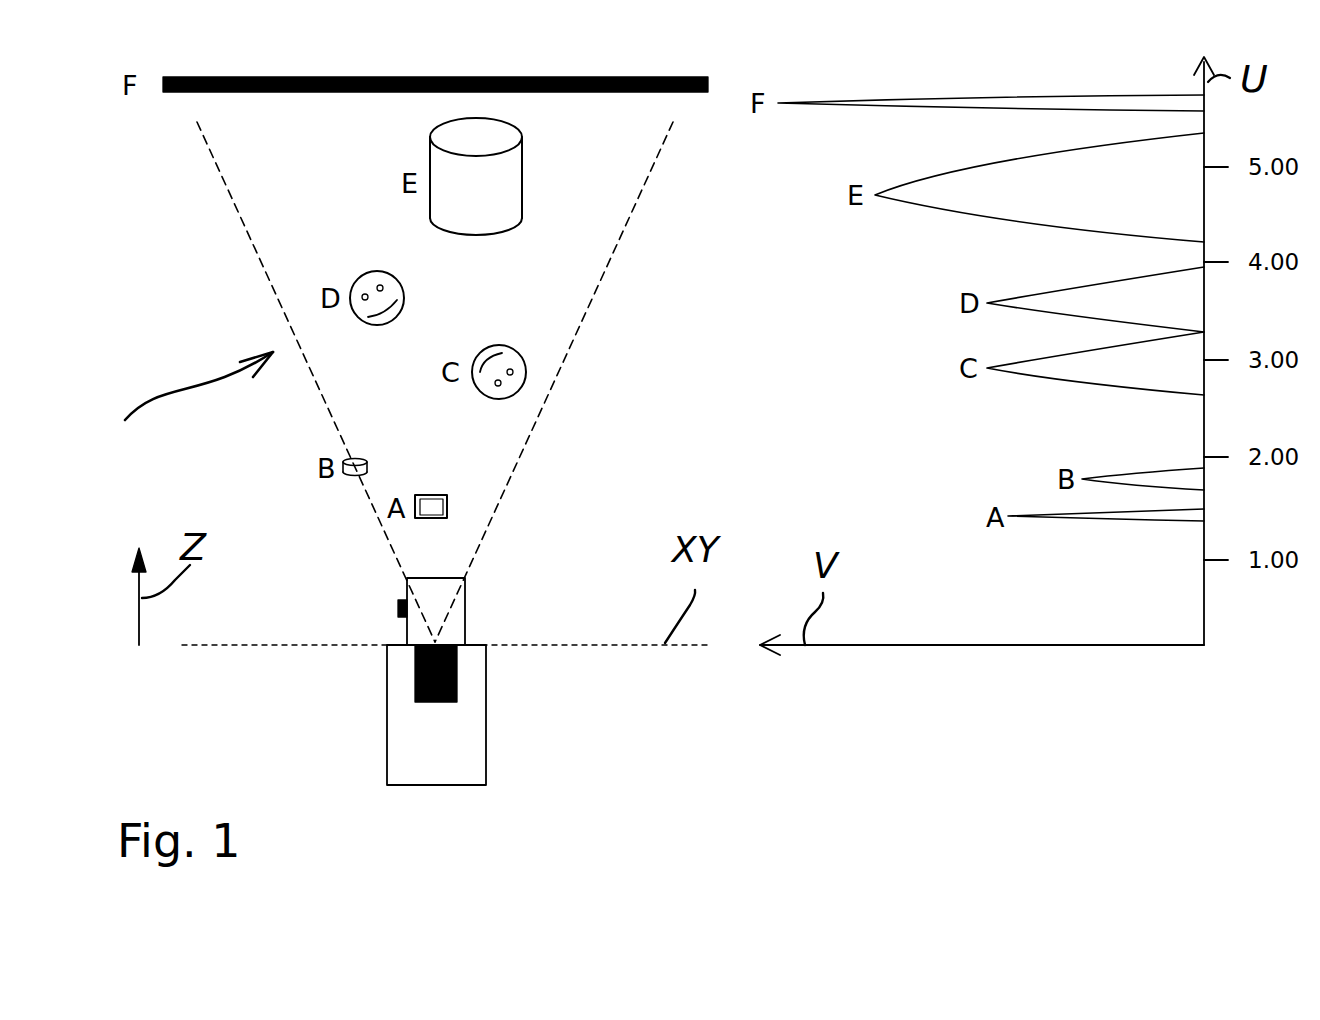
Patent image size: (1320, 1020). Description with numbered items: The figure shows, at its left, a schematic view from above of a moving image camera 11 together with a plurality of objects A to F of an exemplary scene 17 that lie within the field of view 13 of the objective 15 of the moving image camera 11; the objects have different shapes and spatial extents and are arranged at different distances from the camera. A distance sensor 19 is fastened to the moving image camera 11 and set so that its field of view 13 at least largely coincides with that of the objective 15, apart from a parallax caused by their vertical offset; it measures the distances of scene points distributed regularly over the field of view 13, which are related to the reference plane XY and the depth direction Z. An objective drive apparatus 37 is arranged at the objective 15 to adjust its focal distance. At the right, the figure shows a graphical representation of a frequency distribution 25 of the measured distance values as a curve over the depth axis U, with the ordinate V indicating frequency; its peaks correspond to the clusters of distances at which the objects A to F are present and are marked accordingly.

The moving image camera 11 is at (468, 748).
The field of view 13 is at (243, 238).
The objective 15 is at (457, 620).
The scene 17 is at (176, 416).
The distance sensor 19 is at (413, 673).
The frequency distribution 25 is at (963, 217).
The objective drive apparatus 37 is at (398, 605).